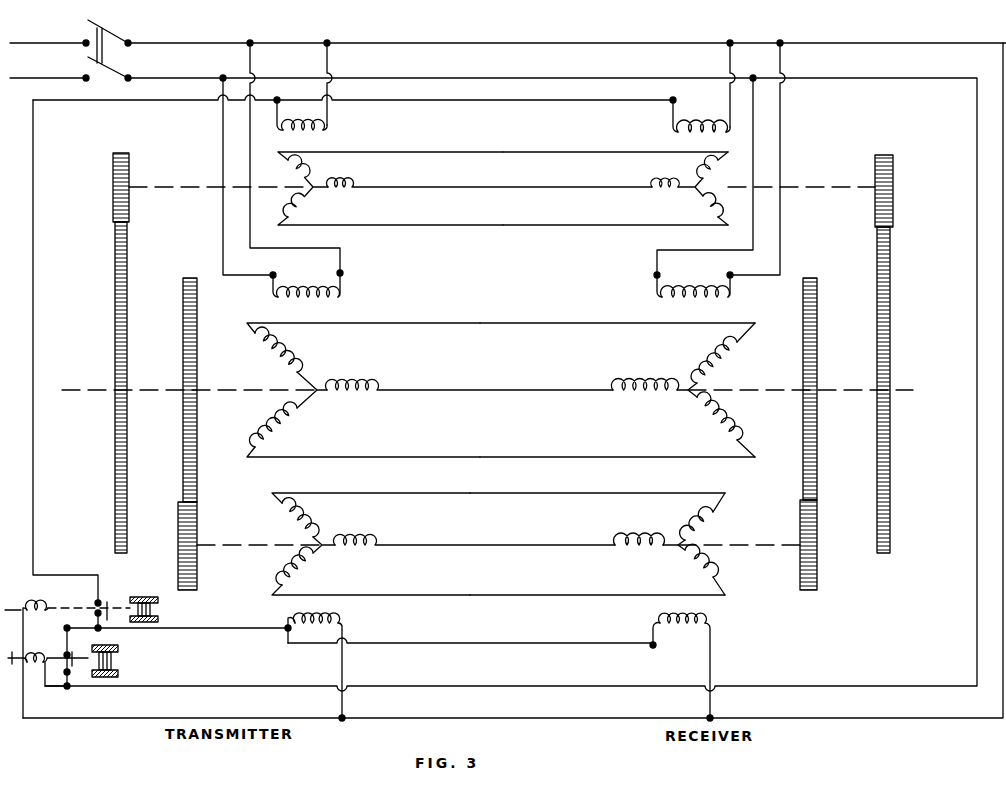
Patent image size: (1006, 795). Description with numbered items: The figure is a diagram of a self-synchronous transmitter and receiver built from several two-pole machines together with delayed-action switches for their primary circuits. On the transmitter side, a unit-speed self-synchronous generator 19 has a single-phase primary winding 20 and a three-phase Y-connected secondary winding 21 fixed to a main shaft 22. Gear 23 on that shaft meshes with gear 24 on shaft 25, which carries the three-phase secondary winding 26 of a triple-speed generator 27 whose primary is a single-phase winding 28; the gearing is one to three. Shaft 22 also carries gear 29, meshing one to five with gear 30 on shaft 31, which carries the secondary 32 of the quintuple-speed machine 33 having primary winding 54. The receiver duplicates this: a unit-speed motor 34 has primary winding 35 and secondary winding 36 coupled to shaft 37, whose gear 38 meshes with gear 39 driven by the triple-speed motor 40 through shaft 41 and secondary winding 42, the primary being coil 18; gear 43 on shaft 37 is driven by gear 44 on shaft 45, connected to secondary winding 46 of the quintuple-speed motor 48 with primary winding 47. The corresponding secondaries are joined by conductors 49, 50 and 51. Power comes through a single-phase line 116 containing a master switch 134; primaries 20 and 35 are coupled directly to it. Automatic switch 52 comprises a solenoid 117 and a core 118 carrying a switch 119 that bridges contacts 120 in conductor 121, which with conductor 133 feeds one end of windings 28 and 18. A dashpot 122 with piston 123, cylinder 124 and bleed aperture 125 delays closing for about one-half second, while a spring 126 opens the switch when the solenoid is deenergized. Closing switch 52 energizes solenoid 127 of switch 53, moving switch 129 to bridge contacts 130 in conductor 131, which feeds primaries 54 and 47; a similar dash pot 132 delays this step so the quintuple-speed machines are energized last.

The master switch 134 is at (105, 50).
The single-phase line 116 is at (592, 78).
The conductor 131 is at (353, 349).
The primary winding 54 is at (290, 128).
The primary winding 47 is at (701, 116).
The single-phase primary winding 20 is at (306, 283).
The single-phase primary winding 35 is at (693, 283).
The quintuple-speed machine 33 is at (344, 133).
The three-phase secondary 32 is at (488, 174).
The conductor 51 is at (548, 225).
The quintuple-speed motor 48 is at (656, 133).
The three-phase secondary winding 46 is at (665, 174).
The shaft 31 is at (175, 168).
The shaft 45 is at (803, 187).
The gear 30 is at (113, 182).
The gear 29 is at (117, 325).
The gear 44 is at (893, 193).
The gear 43 is at (890, 340).
The gear 23 is at (183, 327).
The gear 24 is at (178, 537).
The gear 38 is at (817, 345).
The gear 39 is at (817, 532).
The self-synchronous generator 19 is at (364, 299).
The three-phase Y-connected secondary winding 21 is at (469, 377).
The conductor 49 is at (528, 458).
The unit-speed motor 34 is at (628, 299).
The three-phase Y-connected secondary winding 36 is at (644, 377).
The main shaft 22 is at (170, 390).
The shaft 37 is at (822, 391).
The two-pole generator 27 is at (393, 616).
The three-phase secondary winding 26 is at (474, 531).
The conductor 50 is at (505, 593).
The triple-speed motor 40 is at (740, 630).
The three-phase secondary winding 42 is at (639, 532).
The shaft 25 is at (245, 527).
The shaft 41 is at (743, 542).
The conductor 133 is at (214, 630).
The single-phase winding 28 is at (469, 667).
The coil 18 is at (681, 667).
The solenoid 127 is at (52, 587).
The switch 53 is at (89, 599).
The contacts 130 is at (97, 600).
The switch 129 is at (106, 610).
The dash pot 132 is at (174, 612).
The core 118 is at (44, 650).
The automatic switch 52 is at (54, 659).
The switch 119 is at (75, 667).
The contacts 120 is at (64, 674).
The conductor 121 is at (70, 660).
The solenoid 117 is at (38, 668).
The dashpot 122 is at (130, 675).
The spring 126 is at (105, 648).
The cylinder 124 is at (113, 647).
The bleed aperture 125 is at (118, 658).
The piston 123 is at (118, 667).